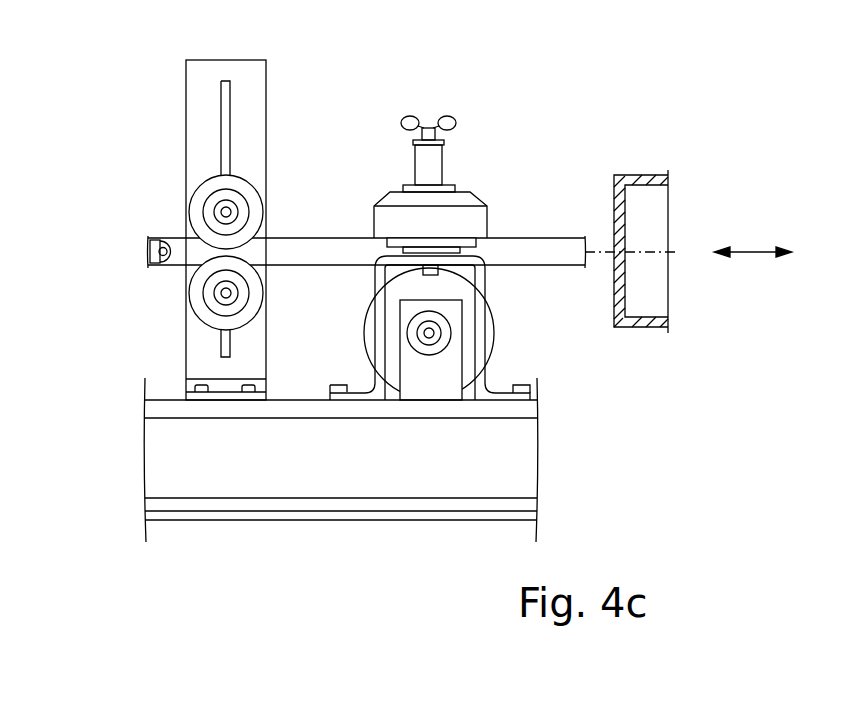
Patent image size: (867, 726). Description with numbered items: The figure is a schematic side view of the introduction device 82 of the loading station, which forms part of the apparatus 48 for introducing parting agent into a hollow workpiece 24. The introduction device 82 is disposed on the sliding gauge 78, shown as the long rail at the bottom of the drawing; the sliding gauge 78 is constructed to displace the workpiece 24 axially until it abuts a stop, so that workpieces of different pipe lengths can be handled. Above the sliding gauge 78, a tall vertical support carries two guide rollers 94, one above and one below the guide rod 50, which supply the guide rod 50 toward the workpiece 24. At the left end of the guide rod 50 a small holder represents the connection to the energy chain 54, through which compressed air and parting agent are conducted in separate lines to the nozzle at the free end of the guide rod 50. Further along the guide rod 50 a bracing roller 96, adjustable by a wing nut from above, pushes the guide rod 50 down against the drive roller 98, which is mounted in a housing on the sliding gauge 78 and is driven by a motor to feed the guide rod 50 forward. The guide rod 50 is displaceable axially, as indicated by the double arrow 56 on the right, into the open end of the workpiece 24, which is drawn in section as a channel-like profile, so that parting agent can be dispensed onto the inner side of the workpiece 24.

The introduction device 82 is at (135, 108).
The guide rollers 94 is at (200, 190).
The energy chain 54 is at (148, 243).
The apparatus for introducing parting agent 48 is at (312, 253).
The bracing roller 96 is at (462, 218).
The guide rod 50 is at (547, 250).
The double arrow 56 is at (752, 252).
The hollow workpiece 24 is at (652, 332).
The drive roller 98 is at (493, 335).
The sliding gauge 78 is at (305, 472).